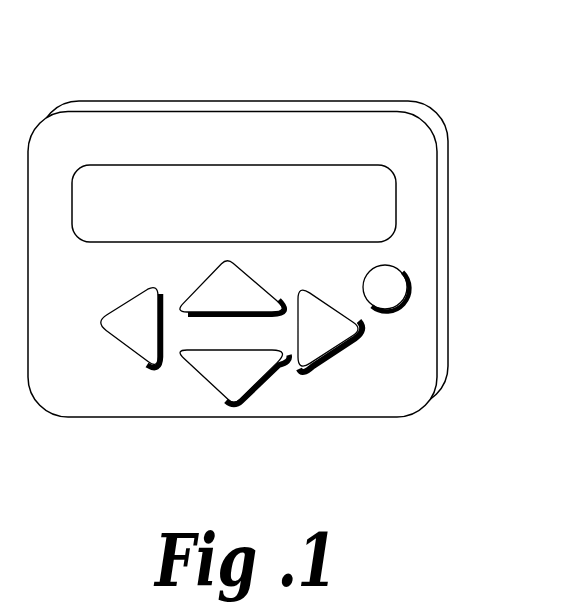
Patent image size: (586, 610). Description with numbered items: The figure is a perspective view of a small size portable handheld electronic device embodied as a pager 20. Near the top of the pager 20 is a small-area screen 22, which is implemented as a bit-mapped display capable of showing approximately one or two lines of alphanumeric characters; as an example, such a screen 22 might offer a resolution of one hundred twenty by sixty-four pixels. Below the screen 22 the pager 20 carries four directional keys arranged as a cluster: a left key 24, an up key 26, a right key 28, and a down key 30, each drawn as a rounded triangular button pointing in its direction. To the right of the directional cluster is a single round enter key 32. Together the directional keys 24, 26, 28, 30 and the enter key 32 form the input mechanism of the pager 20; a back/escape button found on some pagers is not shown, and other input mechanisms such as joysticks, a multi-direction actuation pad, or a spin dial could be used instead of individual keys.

The pager 20 is at (244, 64).
The screen 22 is at (233, 165).
The left key 24 is at (126, 306).
The up key 26 is at (201, 285).
The right key 28 is at (330, 350).
The down key 30 is at (203, 373).
The enter key 32 is at (408, 285).